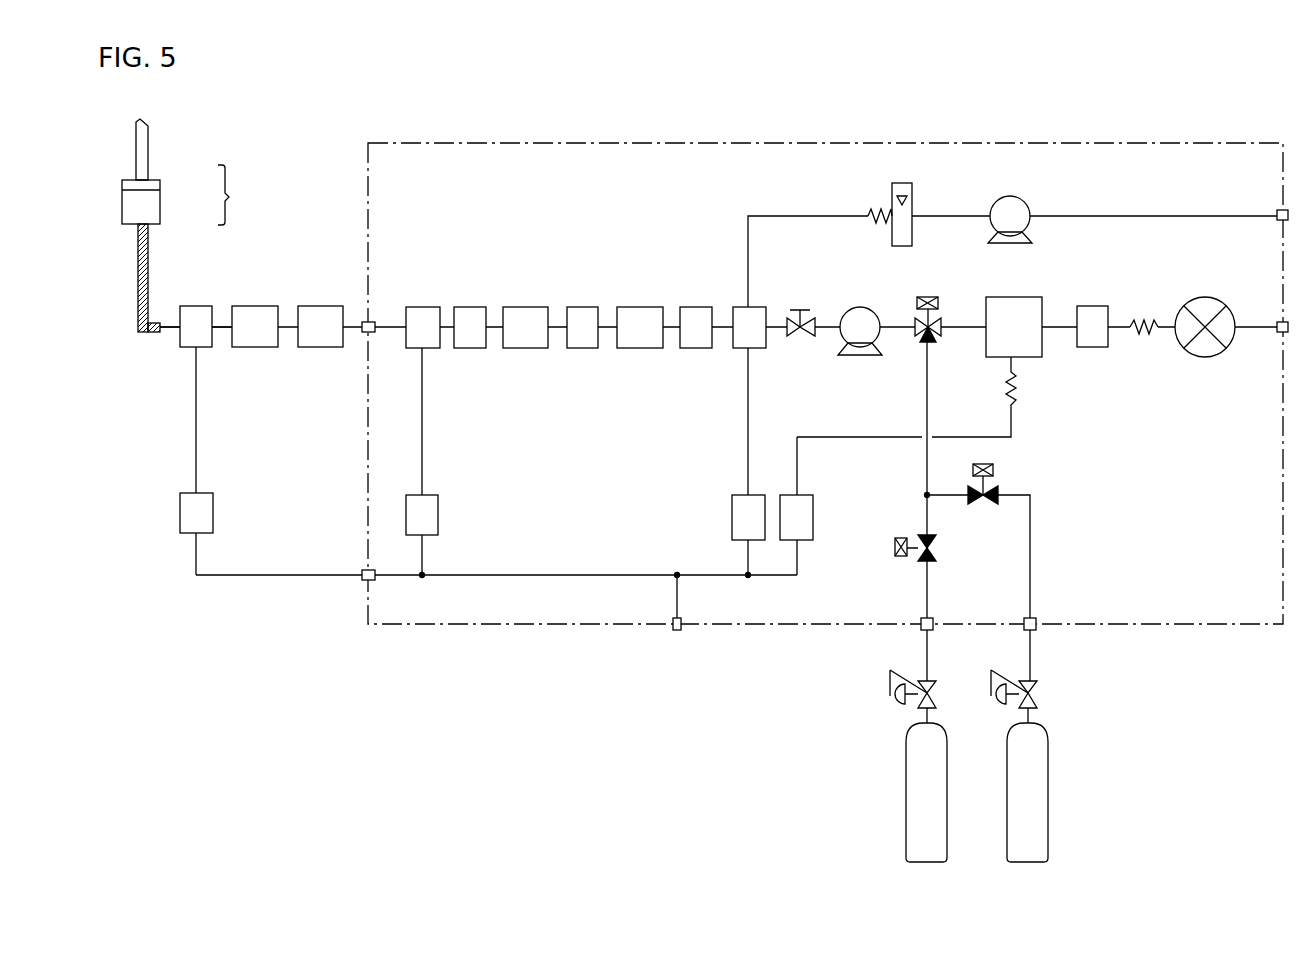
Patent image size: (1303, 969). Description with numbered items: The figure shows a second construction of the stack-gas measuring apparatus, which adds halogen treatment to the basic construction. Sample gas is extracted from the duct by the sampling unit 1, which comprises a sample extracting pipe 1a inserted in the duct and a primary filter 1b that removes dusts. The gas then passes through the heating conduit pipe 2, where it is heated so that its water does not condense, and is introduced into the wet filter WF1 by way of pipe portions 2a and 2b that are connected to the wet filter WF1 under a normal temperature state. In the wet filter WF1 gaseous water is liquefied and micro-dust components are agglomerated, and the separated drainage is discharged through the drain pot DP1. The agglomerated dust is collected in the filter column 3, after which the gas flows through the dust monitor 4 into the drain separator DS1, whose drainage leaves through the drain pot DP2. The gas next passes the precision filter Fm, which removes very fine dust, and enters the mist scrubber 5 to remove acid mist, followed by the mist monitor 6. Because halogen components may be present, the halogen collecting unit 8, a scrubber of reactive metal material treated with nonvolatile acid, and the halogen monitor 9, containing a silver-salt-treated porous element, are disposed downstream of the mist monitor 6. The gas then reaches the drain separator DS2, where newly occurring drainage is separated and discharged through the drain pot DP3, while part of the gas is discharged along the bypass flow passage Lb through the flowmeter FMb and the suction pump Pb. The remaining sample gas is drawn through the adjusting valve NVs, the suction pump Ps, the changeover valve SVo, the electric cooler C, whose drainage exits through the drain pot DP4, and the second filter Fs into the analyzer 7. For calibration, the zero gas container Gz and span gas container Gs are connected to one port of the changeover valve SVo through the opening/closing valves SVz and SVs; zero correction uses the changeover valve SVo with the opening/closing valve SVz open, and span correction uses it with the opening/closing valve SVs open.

The sampling unit 1 is at (182, 179).
The sample extracting pipe 1a is at (148, 143).
The primary filter 1b is at (160, 210).
The heating conduit pipe 2 is at (148, 253).
The pipe portion 2a is at (170, 330).
The pipe portion 2b is at (218, 330).
The wet filter WF1 is at (197, 305).
The filter column 3 is at (263, 306).
The dust monitor 4 is at (323, 306).
The drain separator DS1 is at (447, 288).
The precision filter Fm is at (470, 348).
The mist scrubber 5 is at (533, 307).
The mist monitor 6 is at (584, 307).
The halogen collecting unit 8 is at (648, 305).
The halogen monitor 9 is at (700, 307).
The drain separator DS2 is at (758, 305).
The adjusting valve NVs is at (807, 307).
The suction pump Ps is at (872, 310).
The changeover valve SVo is at (935, 297).
The electric cooler C is at (1022, 297).
The second filter Fs is at (1095, 307).
The analyzer 7 is at (1217, 297).
The bypass flow passage Lb is at (805, 216).
The flowmeter FMb is at (913, 200).
The suction pump Pb is at (1015, 197).
The drain pot DP1 is at (215, 510).
The drain pot DP2 is at (440, 512).
The drain pot DP3 is at (732, 517).
The drain pot DP4 is at (813, 518).
The opening/closing valve SVs is at (918, 558).
The opening/closing valve SVz is at (972, 503).
The span gas container Gs is at (906, 778).
The zero gas container Gz is at (1048, 778).